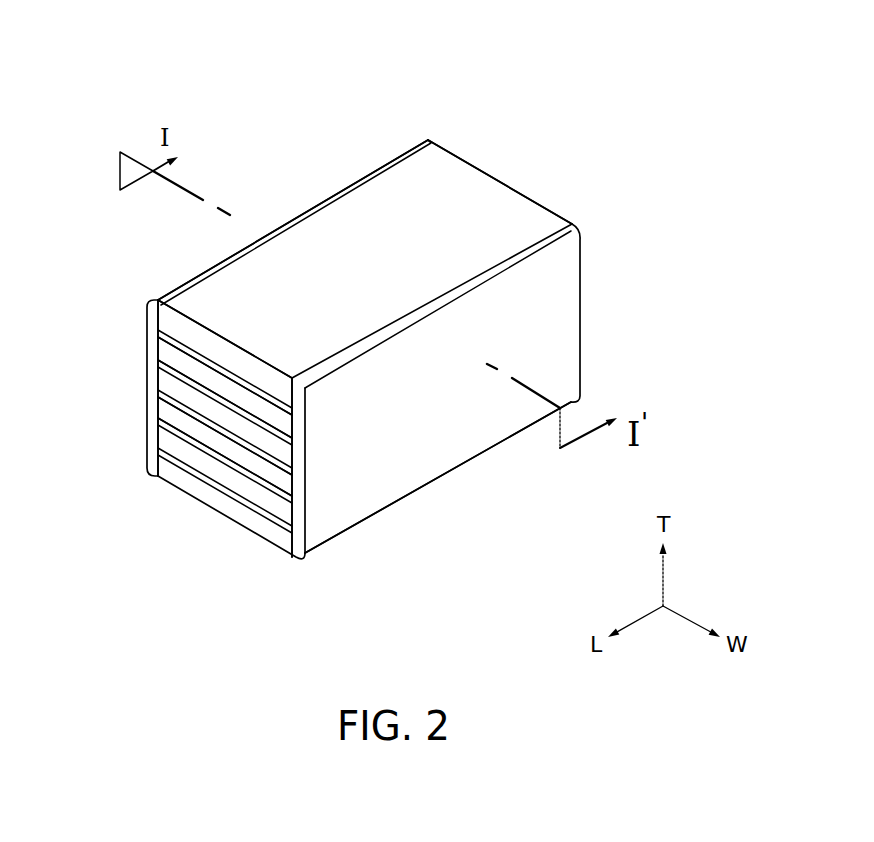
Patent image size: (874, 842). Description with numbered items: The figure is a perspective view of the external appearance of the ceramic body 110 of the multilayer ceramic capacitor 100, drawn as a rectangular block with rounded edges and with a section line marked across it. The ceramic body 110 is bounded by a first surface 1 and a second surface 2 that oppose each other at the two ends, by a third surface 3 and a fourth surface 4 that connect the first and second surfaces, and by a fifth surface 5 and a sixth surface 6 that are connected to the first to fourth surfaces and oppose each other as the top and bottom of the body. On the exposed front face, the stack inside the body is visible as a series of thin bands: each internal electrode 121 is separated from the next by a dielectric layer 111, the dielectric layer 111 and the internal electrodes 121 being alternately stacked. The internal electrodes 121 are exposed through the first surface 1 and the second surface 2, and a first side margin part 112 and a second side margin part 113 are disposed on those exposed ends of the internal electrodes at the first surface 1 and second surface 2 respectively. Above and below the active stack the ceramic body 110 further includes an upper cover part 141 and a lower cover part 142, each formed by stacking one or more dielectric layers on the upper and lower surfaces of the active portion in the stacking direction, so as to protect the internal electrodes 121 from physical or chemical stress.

The multilayer ceramic capacitor 100 is at (147, 57).
The ceramic body 110 is at (351, 332).
The dielectric layer 111 is at (167, 412).
The first side margin part 112 is at (262, 236).
The second side margin part 113 is at (533, 243).
The internal electrode 121 is at (167, 375).
The upper cover part 141 is at (165, 320).
The lower cover part 142 is at (243, 520).
The first surface 1 is at (206, 296).
The second surface 2 is at (536, 349).
The third surface 3 is at (208, 475).
The fourth surface 4 is at (503, 212).
The fifth surface 5 is at (399, 194).
The sixth surface 6 is at (459, 445).